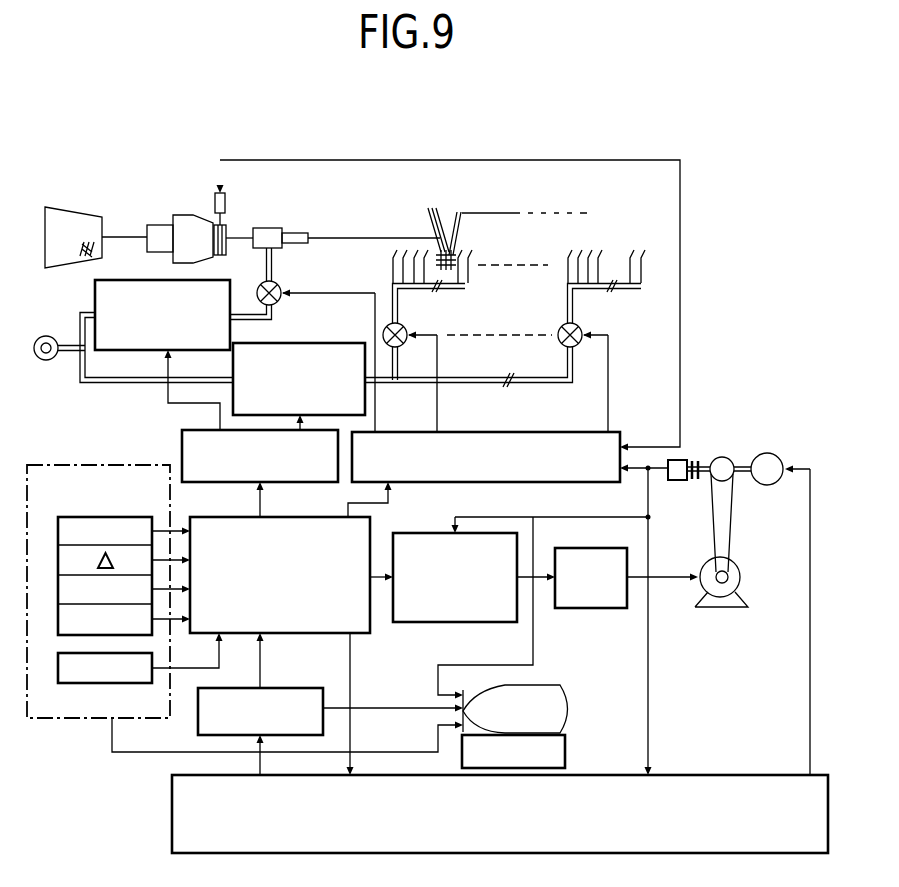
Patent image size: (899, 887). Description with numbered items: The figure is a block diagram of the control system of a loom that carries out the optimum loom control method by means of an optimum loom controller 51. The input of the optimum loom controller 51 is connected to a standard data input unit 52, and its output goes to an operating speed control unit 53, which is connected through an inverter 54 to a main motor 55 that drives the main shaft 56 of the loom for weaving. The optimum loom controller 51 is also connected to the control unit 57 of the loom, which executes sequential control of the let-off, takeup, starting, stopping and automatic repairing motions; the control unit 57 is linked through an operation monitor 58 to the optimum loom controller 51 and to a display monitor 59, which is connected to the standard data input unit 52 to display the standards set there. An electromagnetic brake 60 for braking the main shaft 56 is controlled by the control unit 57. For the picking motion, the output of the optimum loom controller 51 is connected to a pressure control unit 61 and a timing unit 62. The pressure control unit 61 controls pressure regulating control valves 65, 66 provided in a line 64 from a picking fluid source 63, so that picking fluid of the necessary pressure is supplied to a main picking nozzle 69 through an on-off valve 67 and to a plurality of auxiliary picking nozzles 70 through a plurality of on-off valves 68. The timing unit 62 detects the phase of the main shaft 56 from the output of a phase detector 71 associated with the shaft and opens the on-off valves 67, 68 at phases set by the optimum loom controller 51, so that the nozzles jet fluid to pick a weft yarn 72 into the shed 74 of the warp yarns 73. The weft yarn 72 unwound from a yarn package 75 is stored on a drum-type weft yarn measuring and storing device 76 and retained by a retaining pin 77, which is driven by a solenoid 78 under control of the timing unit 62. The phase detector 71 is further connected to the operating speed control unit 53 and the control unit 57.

The optimum loom controller 51 is at (290, 516).
The standard data input unit 52 is at (70, 462).
The operating speed control unit 53 is at (413, 623).
The inverter 54 is at (604, 609).
The main motor 55 is at (741, 564).
The main shaft 56 is at (723, 456).
The control unit 57 is at (172, 810).
The operation monitor 58 is at (298, 688).
The display monitor 59 is at (569, 706).
The electromagnetic brake 60 is at (770, 452).
The pressure control unit 61 is at (182, 441).
The timing unit 62 is at (523, 432).
The picking fluid source 63 is at (46, 335).
The line 64 is at (117, 384).
The pressure regulating control valve 65 is at (150, 281).
The pressure regulating control valve 66 is at (325, 343).
The on-off valve 67 is at (279, 287).
The on-off valves 68 is at (406, 331).
The main picking nozzle 69 is at (268, 228).
The auxiliary picking nozzles 70 is at (386, 256).
The phase detector 71 is at (680, 483).
The weft yarn 72 is at (351, 236).
The warp yarns 73 is at (463, 226).
The shed 74 is at (440, 207).
The yarn package 75 is at (101, 216).
The weft yarn measuring and storing device 76 is at (177, 216).
The retaining pin 77 is at (215, 224).
The solenoid 78 is at (226, 205).